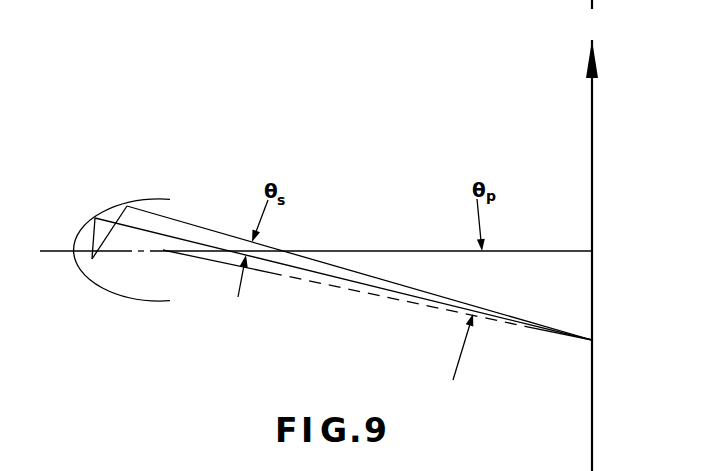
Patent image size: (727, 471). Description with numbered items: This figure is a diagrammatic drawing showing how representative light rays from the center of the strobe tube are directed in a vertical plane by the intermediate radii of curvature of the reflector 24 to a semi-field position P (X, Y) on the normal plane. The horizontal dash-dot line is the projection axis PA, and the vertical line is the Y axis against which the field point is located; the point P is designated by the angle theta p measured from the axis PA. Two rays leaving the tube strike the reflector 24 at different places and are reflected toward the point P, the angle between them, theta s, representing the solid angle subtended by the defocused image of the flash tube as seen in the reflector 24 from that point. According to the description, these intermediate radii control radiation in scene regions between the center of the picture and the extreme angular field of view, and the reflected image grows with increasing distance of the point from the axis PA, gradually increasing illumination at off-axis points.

The reflector 24 is at (86, 224).
The Y coordinate of field point Y is at (591, 235).
The projection axis PA is at (399, 251).
The semi-field position P (X, Y) P is at (592, 341).